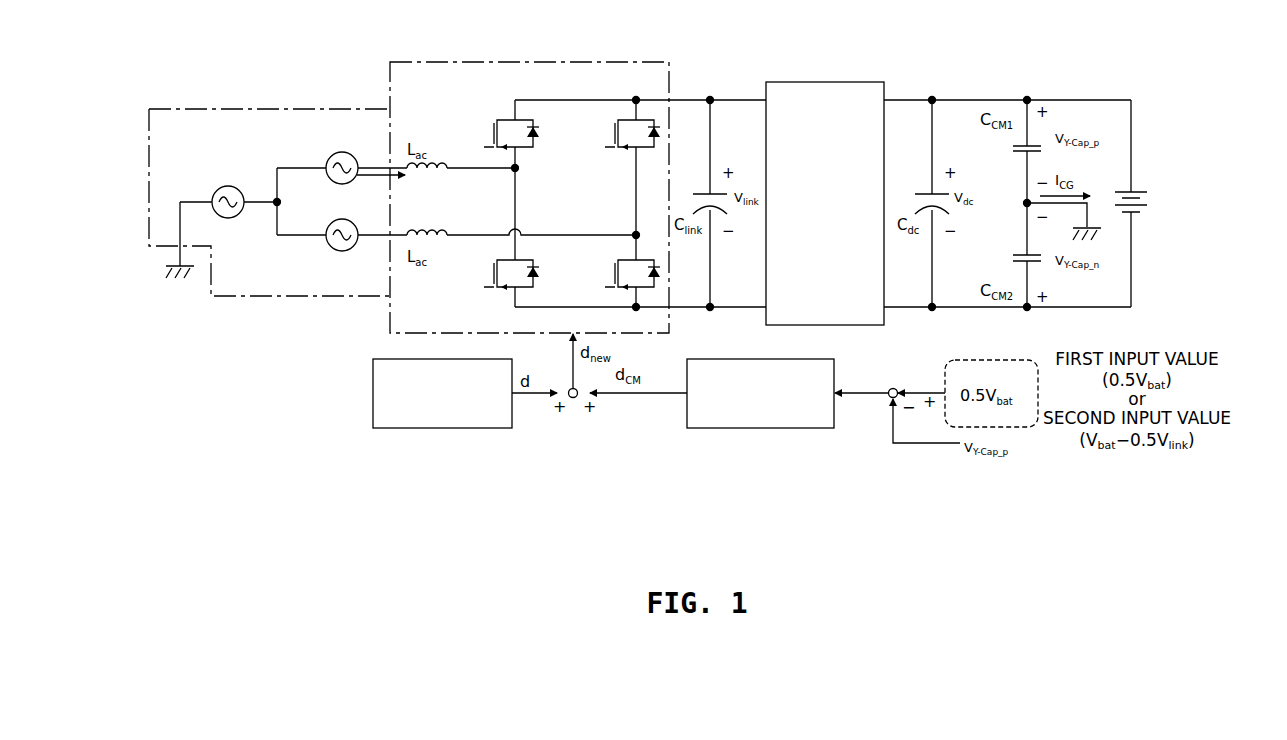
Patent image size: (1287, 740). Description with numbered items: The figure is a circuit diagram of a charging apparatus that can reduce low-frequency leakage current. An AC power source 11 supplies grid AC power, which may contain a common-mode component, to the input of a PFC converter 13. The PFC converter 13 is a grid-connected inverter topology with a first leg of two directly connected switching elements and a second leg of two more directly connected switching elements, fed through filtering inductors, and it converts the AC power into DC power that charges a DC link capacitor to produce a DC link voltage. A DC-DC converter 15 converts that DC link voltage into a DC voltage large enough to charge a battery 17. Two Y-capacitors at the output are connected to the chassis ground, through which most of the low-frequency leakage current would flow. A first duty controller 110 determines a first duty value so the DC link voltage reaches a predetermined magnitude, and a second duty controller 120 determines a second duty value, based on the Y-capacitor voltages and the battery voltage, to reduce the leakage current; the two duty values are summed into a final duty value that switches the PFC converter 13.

The AC power source 11 is at (270, 108).
The PFC converter 13 is at (530, 62).
The DC-DC converter 15 is at (828, 82).
The battery 17 is at (1140, 187).
The first duty controller 110 is at (441, 428).
The second duty controller 120 is at (762, 428).